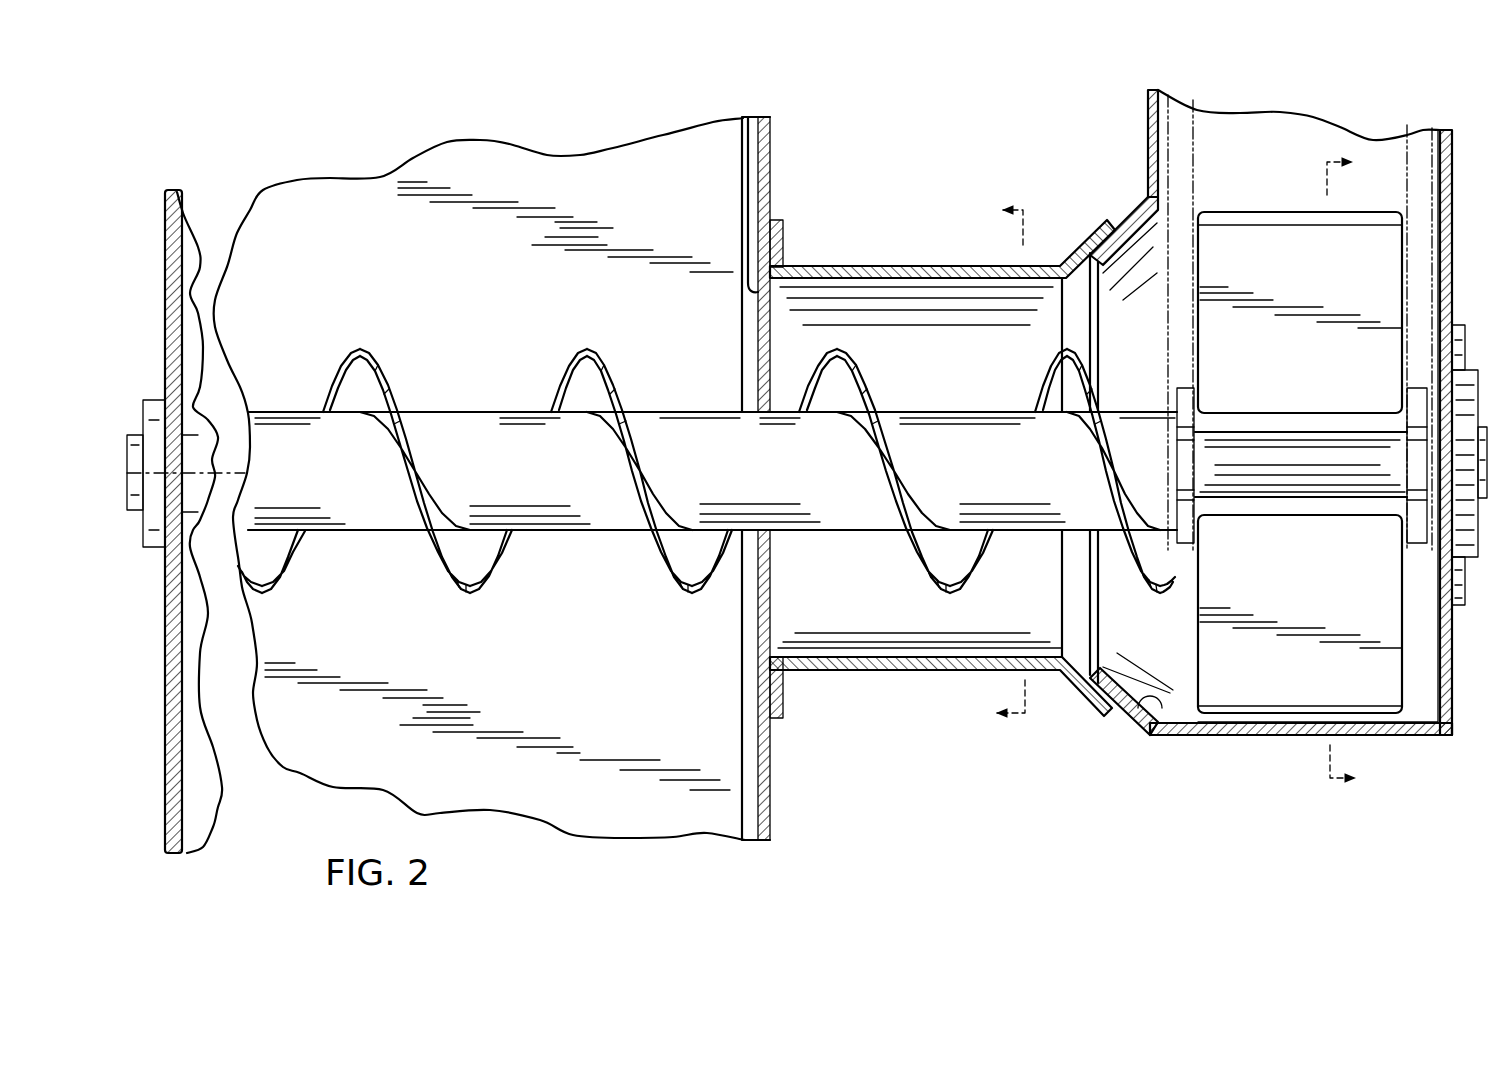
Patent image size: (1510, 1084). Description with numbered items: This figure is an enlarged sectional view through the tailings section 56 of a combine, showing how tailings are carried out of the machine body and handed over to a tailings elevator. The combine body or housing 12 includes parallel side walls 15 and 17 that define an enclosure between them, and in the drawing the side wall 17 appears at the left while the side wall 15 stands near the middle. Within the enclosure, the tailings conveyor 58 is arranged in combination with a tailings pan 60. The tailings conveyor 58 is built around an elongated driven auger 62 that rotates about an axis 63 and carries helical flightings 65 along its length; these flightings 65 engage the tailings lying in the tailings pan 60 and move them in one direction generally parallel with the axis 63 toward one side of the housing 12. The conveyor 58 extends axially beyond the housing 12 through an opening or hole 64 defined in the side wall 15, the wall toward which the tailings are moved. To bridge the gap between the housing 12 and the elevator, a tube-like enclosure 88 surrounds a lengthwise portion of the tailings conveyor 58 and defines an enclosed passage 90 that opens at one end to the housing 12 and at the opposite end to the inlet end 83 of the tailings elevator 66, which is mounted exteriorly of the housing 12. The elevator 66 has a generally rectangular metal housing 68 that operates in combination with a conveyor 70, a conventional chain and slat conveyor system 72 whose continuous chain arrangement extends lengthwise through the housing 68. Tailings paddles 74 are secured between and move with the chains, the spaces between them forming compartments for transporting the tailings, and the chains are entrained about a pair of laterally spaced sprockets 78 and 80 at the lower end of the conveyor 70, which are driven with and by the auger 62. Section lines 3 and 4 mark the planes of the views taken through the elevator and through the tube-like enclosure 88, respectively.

The section line 3— 3 is at (1354, 471).
The section line 4— 4 is at (995, 462).
The housing 12 is at (800, 114).
The side wall 15 is at (766, 160).
The side wall 17 is at (162, 824).
The tailings section 56 is at (757, 763).
The tailings conveyor 58 is at (404, 347).
The tailings pan 60 is at (480, 479).
The auger 62 is at (655, 416).
The axis 63 is at (270, 473).
The opening 64 is at (733, 288).
The flightings 65 is at (658, 560).
The tailings elevator 66 is at (1461, 153).
The housing 68 is at (1144, 115).
The conveyor 70 is at (1232, 206).
The chain and slat conveyor system 72 is at (1204, 127).
The tailings paddles 74 is at (1281, 465).
The sprocket 78 is at (1199, 531).
The sprocket 80 is at (1408, 530).
The inlet end 83 is at (1150, 736).
The tube-like enclosure 88 is at (930, 680).
The enclosed passage 90 is at (935, 278).